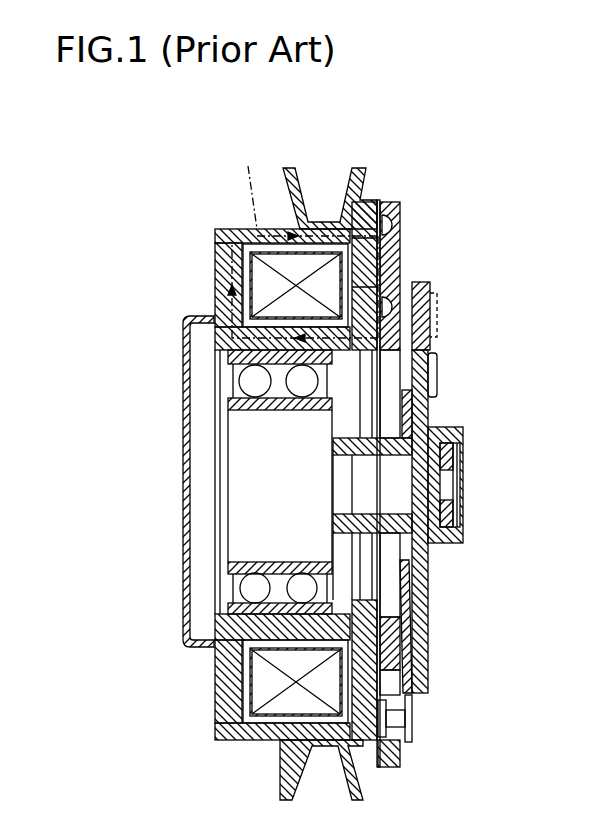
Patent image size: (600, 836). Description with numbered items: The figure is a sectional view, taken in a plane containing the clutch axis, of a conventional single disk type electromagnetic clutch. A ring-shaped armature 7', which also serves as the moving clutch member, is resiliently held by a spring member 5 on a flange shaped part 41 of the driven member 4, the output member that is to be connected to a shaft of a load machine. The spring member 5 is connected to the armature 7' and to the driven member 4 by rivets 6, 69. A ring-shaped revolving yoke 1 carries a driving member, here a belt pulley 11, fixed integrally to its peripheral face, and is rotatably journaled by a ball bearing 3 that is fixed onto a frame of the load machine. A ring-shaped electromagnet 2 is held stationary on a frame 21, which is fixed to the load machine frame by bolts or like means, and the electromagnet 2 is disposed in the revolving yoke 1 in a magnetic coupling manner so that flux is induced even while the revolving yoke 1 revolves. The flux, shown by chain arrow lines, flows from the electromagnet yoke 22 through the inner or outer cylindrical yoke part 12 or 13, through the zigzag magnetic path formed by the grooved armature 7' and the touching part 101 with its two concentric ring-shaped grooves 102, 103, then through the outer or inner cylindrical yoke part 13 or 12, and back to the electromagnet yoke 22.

The revolving yoke 1 is at (230, 741).
The electromagnet 2 is at (272, 283).
The ball bearing 3 is at (246, 582).
The driven member 4 is at (434, 430).
The spring member 5 is at (413, 643).
The rivet 6 is at (405, 723).
The armature 7' is at (426, 763).
The belt pulley 11 is at (355, 169).
The inner cylindrical yoke part 12 is at (228, 231).
The outer cylindrical yoke part 13 is at (225, 341).
The frame 21 is at (184, 320).
The electromagnet yoke 22 is at (213, 258).
The flange shaped part 41 is at (431, 288).
The rivet 69 is at (431, 380).
The touching part 101 is at (400, 276).
The ring-shaped groove 102 is at (398, 249).
The ring-shaped groove 103 is at (380, 284).